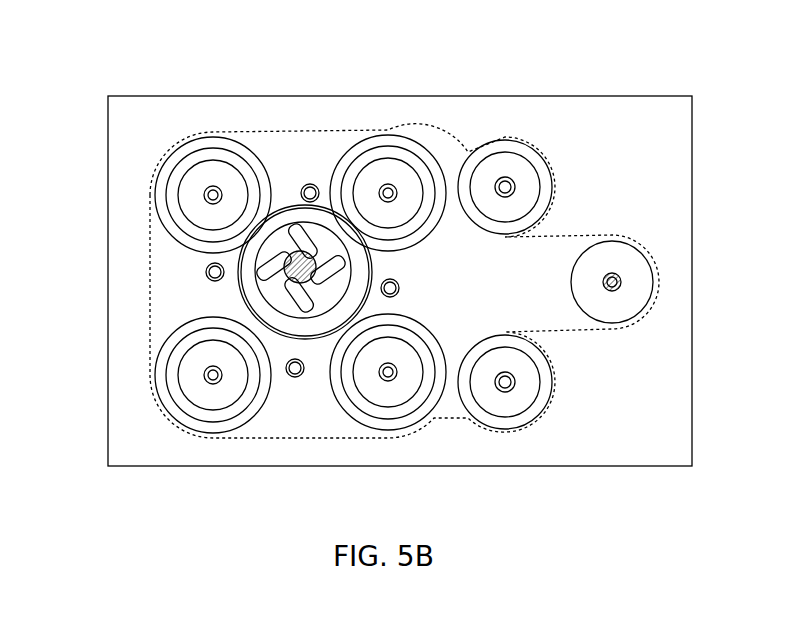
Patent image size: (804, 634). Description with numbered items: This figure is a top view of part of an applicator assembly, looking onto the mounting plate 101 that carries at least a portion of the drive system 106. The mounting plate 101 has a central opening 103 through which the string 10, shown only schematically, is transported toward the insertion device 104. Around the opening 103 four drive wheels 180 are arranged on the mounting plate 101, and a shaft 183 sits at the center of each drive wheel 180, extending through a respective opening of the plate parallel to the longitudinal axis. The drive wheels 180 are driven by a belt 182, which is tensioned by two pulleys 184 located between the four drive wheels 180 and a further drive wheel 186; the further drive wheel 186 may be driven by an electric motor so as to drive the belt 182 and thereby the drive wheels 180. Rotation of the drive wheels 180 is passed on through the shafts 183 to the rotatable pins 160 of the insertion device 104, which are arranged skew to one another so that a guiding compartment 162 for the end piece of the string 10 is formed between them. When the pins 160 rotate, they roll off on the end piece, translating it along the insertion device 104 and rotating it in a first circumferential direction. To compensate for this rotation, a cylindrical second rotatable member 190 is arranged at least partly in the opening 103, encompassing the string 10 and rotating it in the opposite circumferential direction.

The string 10 is at (285, 310).
The mounting plate 101 is at (650, 88).
The opening 103 is at (265, 256).
The insertion device 104 is at (286, 194).
The drive system 106 is at (519, 50).
The rotatable pins 160 is at (281, 290).
The guiding compartment 162 is at (282, 313).
The drive wheels 180 is at (157, 152).
The belt 182 is at (578, 228).
The shaft 183 is at (389, 175).
The pulleys 184 is at (522, 135).
The further drive wheel 186 is at (622, 297).
The second rotatable member 190 is at (318, 356).